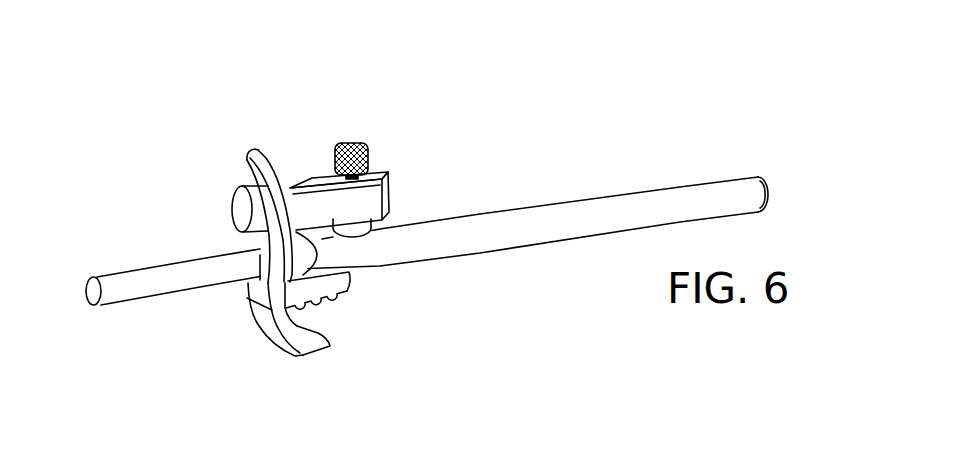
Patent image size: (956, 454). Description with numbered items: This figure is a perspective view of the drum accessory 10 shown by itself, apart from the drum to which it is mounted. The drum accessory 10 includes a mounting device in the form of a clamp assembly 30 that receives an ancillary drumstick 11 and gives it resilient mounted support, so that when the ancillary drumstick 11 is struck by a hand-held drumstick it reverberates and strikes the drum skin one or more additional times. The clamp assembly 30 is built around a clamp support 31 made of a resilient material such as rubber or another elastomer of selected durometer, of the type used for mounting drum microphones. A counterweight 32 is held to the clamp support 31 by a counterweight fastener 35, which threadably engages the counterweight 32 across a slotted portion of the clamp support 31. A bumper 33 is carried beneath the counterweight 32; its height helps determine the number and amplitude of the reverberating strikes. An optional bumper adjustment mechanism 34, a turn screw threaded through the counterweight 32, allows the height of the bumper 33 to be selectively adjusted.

The drum accessory 10 is at (529, 106).
The ancillary drumstick 11 is at (438, 258).
The clamp assembly 30 is at (216, 329).
The clamp support 31 is at (295, 348).
The counterweight 32 is at (310, 180).
The bumper 33 is at (383, 214).
The bumper adjustment mechanism 34 is at (369, 167).
The counterweight fastener 35 is at (251, 183).